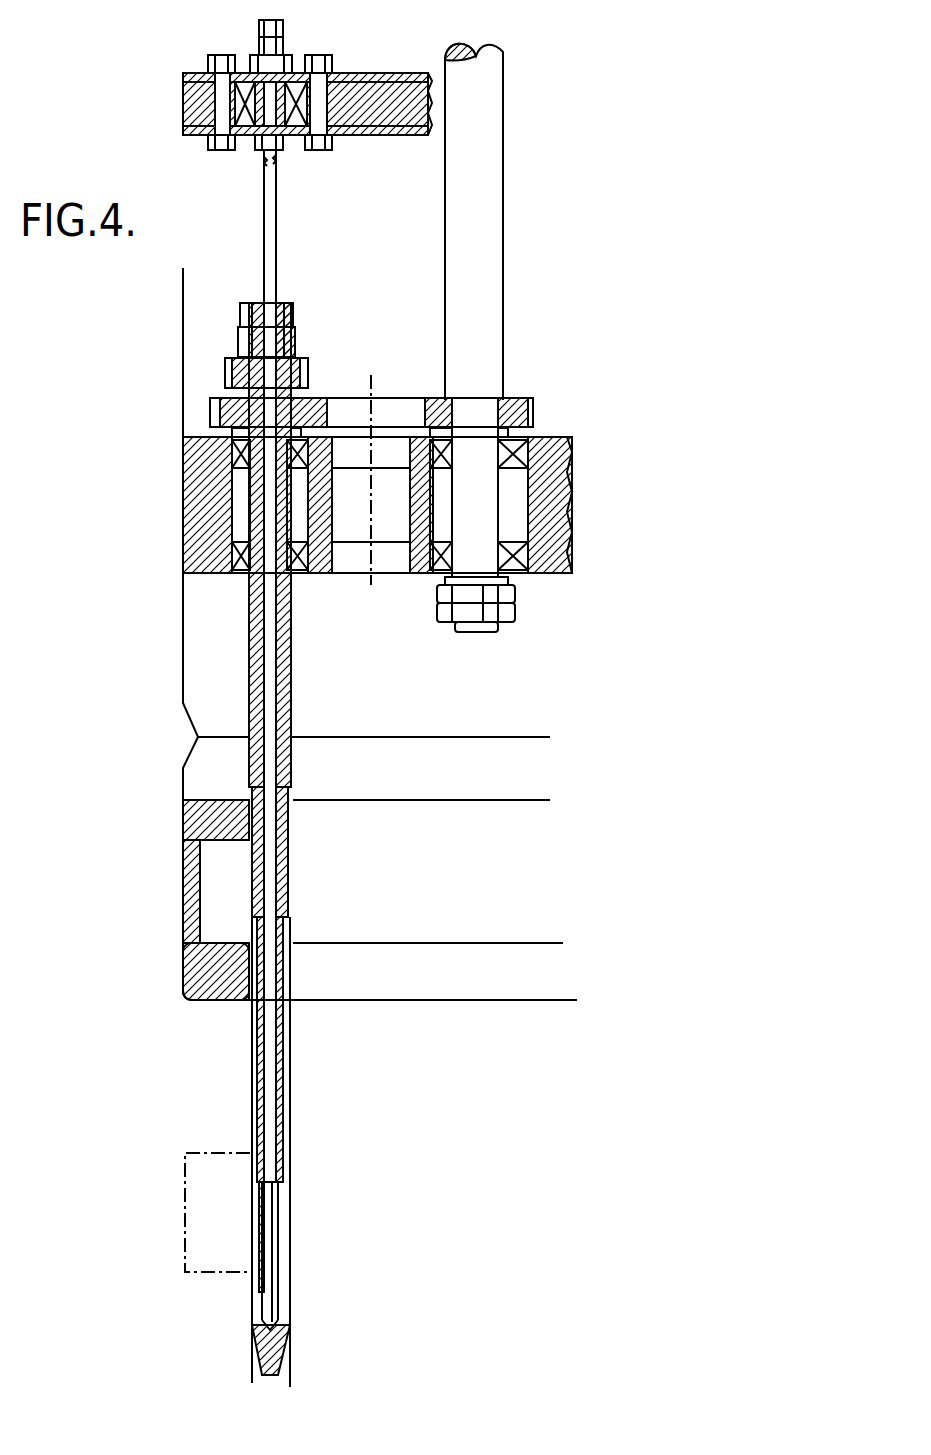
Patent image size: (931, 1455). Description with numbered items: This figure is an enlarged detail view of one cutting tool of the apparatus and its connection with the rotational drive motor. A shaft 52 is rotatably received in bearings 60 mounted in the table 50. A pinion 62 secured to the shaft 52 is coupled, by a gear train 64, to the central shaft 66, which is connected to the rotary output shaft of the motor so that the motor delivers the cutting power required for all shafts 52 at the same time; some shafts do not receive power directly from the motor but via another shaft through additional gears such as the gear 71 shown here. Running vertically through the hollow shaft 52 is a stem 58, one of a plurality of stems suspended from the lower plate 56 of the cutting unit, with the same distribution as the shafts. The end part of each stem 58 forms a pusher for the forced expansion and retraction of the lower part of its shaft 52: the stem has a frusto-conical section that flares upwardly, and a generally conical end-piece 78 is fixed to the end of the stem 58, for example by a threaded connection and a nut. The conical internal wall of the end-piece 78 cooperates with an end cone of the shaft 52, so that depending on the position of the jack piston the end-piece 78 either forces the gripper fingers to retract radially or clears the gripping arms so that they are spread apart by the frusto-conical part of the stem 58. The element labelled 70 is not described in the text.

The table 50 is at (207, 547).
The shaft 52 is at (257, 697).
The lower plate 56 is at (198, 103).
The stem 58 is at (272, 232).
The bearings 60 is at (233, 545).
The pinion 62 is at (210, 410).
The gear train 64 is at (425, 395).
The central shaft 66 is at (477, 268).
The bearing 70 is at (300, 77).
The additional gear 71 is at (230, 375).
The end-piece 78 is at (280, 1362).